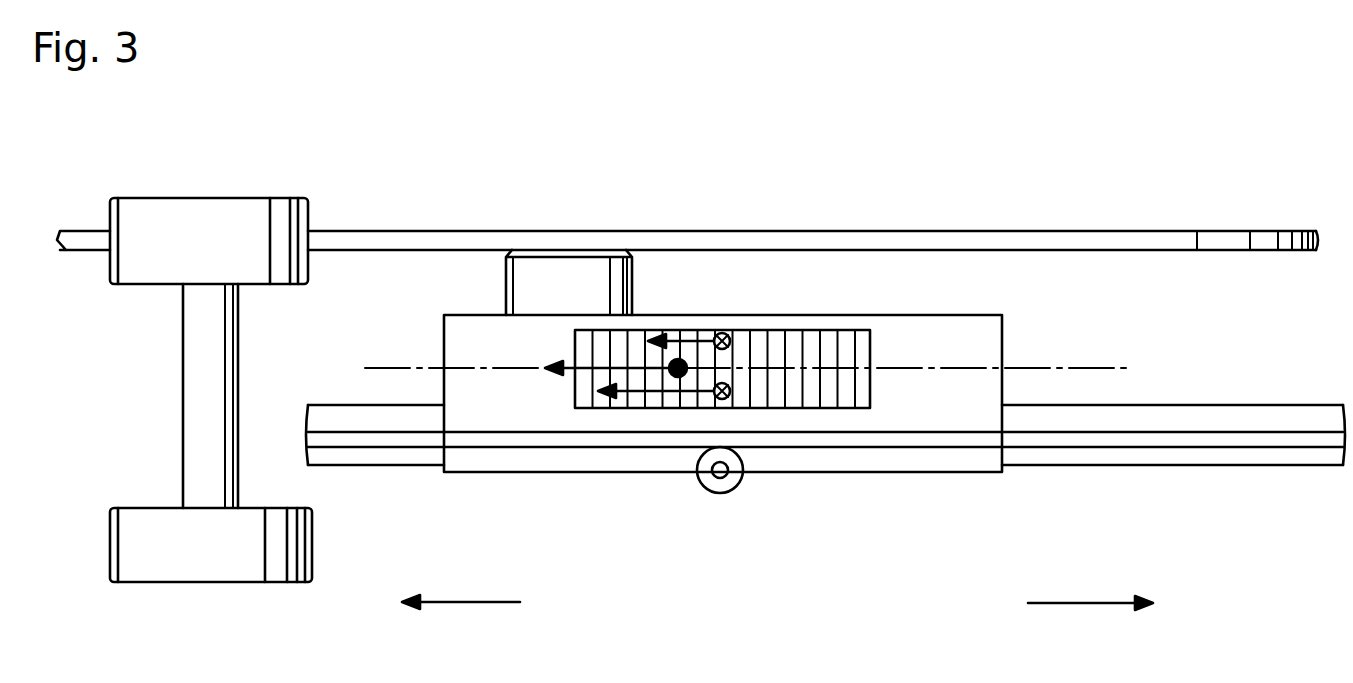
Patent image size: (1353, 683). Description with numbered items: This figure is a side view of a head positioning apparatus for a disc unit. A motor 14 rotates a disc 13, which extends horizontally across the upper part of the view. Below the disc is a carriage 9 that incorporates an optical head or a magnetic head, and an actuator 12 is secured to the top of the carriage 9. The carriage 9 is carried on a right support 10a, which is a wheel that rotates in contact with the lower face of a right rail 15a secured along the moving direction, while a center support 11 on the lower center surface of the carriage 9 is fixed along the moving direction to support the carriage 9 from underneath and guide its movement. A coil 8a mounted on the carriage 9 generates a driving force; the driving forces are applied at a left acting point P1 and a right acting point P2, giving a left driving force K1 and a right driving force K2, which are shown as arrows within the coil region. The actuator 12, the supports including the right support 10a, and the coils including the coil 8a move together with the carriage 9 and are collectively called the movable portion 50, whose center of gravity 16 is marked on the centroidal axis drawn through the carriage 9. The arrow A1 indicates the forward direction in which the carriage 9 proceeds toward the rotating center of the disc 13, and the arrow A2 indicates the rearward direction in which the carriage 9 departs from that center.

The motor 14 is at (170, 198).
The disc 13 is at (806, 231).
The actuator 12 is at (506, 280).
The carriage 9 is at (1002, 332).
The coil 8a is at (830, 330).
The center support 11 is at (1284, 405).
The right rail 15a is at (1220, 448).
The right support 10a is at (722, 493).
The center of gravity 16 is at (682, 357).
The right acting point P2 is at (722, 333).
The left acting point P1 is at (727, 400).
The right driving force K2 is at (684, 336).
The left driving force K1 is at (635, 400).
The movable portion 50 is at (742, 302).
The arrow indicating forward direction A1 is at (462, 604).
The arrow indicating rearward direction A2 is at (1083, 605).